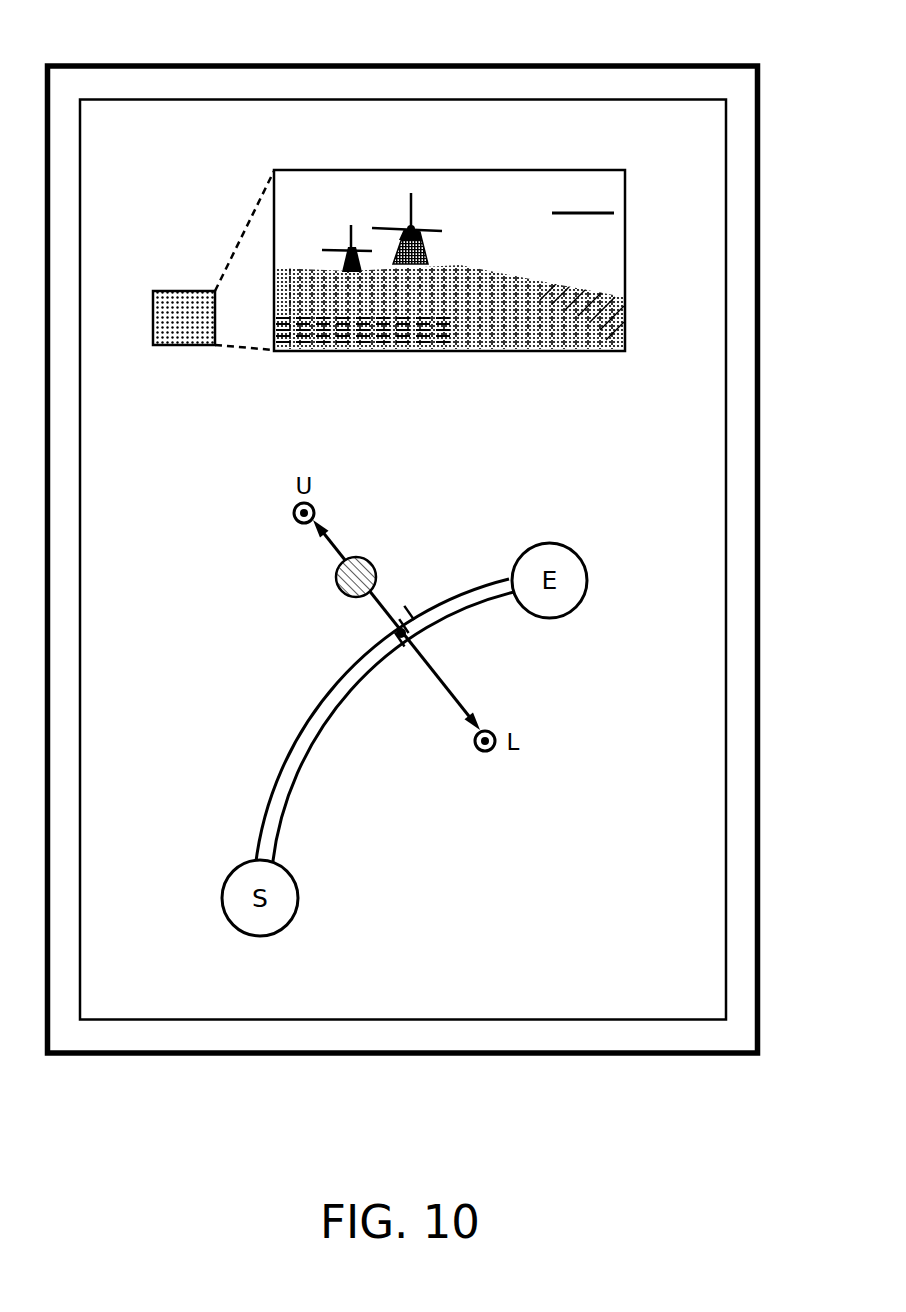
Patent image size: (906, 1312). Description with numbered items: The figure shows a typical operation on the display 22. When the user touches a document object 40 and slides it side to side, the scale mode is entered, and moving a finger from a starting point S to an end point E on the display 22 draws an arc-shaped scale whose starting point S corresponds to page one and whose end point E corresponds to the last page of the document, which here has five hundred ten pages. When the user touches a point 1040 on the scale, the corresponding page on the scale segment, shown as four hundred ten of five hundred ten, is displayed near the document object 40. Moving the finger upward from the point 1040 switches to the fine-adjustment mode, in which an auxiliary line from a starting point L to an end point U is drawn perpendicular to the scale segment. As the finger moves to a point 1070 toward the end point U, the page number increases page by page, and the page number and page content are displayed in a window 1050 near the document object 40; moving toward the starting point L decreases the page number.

The display 22 is at (555, 63).
The document object 40 is at (181, 291).
The window 1050 is at (452, 352).
The point 1070 is at (362, 557).
The point 1040 is at (412, 640).